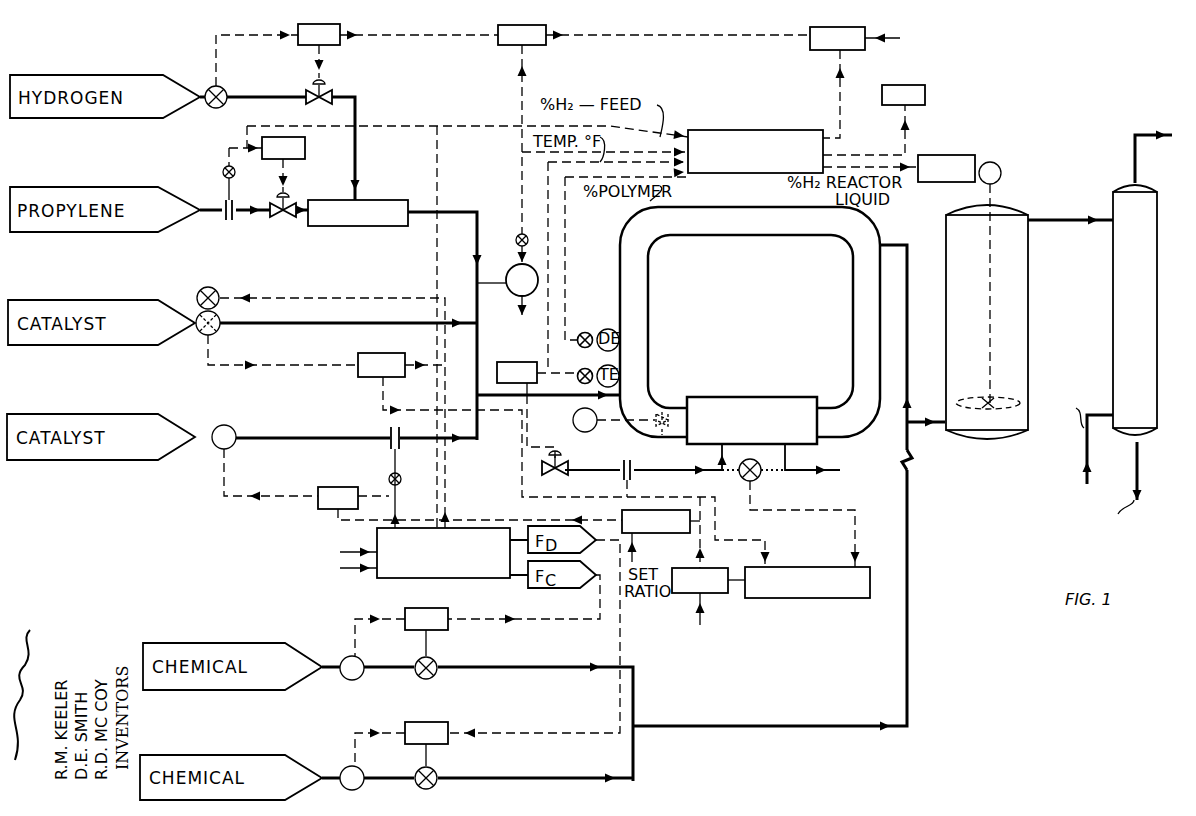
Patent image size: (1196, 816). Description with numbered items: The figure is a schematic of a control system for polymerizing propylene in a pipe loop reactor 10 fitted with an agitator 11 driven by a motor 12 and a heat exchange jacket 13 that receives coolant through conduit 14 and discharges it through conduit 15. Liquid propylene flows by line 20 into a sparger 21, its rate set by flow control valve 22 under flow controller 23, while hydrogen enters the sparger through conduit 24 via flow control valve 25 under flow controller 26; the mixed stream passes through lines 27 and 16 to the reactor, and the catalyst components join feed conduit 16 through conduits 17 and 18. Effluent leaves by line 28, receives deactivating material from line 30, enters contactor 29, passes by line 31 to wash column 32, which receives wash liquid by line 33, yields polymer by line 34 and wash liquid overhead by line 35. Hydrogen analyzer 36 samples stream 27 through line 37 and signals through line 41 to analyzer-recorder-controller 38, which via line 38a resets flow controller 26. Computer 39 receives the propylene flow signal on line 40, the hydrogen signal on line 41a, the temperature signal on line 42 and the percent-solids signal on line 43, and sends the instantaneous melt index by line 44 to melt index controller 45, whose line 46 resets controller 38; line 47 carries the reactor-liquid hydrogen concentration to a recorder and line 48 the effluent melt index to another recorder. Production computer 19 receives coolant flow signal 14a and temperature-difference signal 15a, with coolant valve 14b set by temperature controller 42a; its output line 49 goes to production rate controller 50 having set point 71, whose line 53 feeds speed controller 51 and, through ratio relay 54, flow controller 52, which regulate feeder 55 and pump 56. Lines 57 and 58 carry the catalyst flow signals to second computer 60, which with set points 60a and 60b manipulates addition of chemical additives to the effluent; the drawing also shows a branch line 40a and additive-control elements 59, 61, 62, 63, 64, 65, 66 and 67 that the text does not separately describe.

The pipe loop reactor 10 is at (650, 360).
The agitator 11 is at (674, 404).
The motor 12 is at (575, 424).
The heat exchange jacket 13 is at (750, 397).
The coolant inlet conduit 14 is at (670, 465).
The coolant flow signal line 14a is at (766, 556).
The coolant control valve 14b is at (554, 476).
The coolant outlet conduit 15 is at (830, 476).
The temperature difference signal line 15a is at (856, 520).
The feed conduit 16 is at (572, 396).
The first catalyst conduit 17 is at (400, 325).
The second catalyst conduit 18 is at (477, 442).
The production rate computer 19 is at (866, 598).
The propylene feed line 20 is at (255, 220).
The sparger 21 is at (396, 226).
The flow control valve 22 is at (272, 218).
The rate of flow controller 23 is at (303, 157).
The hydrogen conduit 24 is at (358, 99).
The hydrogen flow control valve 25 is at (336, 90).
The hydrogen flow controller 26 is at (310, 24).
The monomer-hydrogen stream line 27 is at (477, 250).
The reaction effluent line 28 is at (908, 322).
The contactor 29 is at (1016, 424).
The deactivating material line 30 is at (896, 728).
The treated effluent line 31 is at (1098, 220).
The wash column 32 is at (1114, 322).
The wash liquid line 33 is at (1090, 452).
The polymer product line 34 is at (1140, 452).
The wash liquid overhead line 35 is at (1165, 135).
The hydrogen analyzer 36 is at (512, 272).
The sample stream line 37 is at (496, 290).
The analyzer-recorder-controller 38 is at (544, 25).
The control signal line 38a is at (418, 36).
The computer 39 is at (752, 130).
The propylene flow signal line 40 is at (452, 126).
The signal line 40a is at (437, 145).
The hydrogen concentration signal line 41 is at (522, 84).
The hydrogen concentration signal line 41a is at (522, 152).
The temperature signal line 42 is at (562, 248).
The temperature recorder controller 42a is at (518, 362).
The polymer concentration signal line 43 is at (565, 268).
The instantaneous melt index signal line 44 is at (840, 98).
The melt index recording controller 45 is at (828, 27).
The set point signal line 46 is at (728, 36).
The reactor liquid hydrogen signal line 47 is at (914, 165).
The effluent melt index signal line 48 is at (896, 152).
The production rate signal line 49 is at (706, 600).
The production rate recording controller 50 is at (688, 602).
The speed recording controller 51 is at (378, 353).
The flow recording controller 52 is at (350, 487).
The control signal line 53 is at (700, 538).
The ratio relay 54 is at (640, 534).
The feeder 55 is at (218, 336).
The motor-driven pump 56 is at (230, 448).
The catalyst flow signal line 57 is at (328, 298).
The catalyst flow signal line 58 is at (400, 494).
The signal line 59 is at (592, 620).
The second computer 60 is at (462, 578).
The set point 60a is at (360, 550).
The set point 60b is at (346, 572).
The signal line 61 is at (620, 634).
The flow recorder controller 62 is at (446, 630).
The flow recorder controller 63 is at (446, 744).
The pump 64 is at (340, 660).
The pump 65 is at (340, 770).
The chemical line 66 is at (636, 684).
The chemical line 67 is at (636, 774).
The set point 71 is at (706, 622).